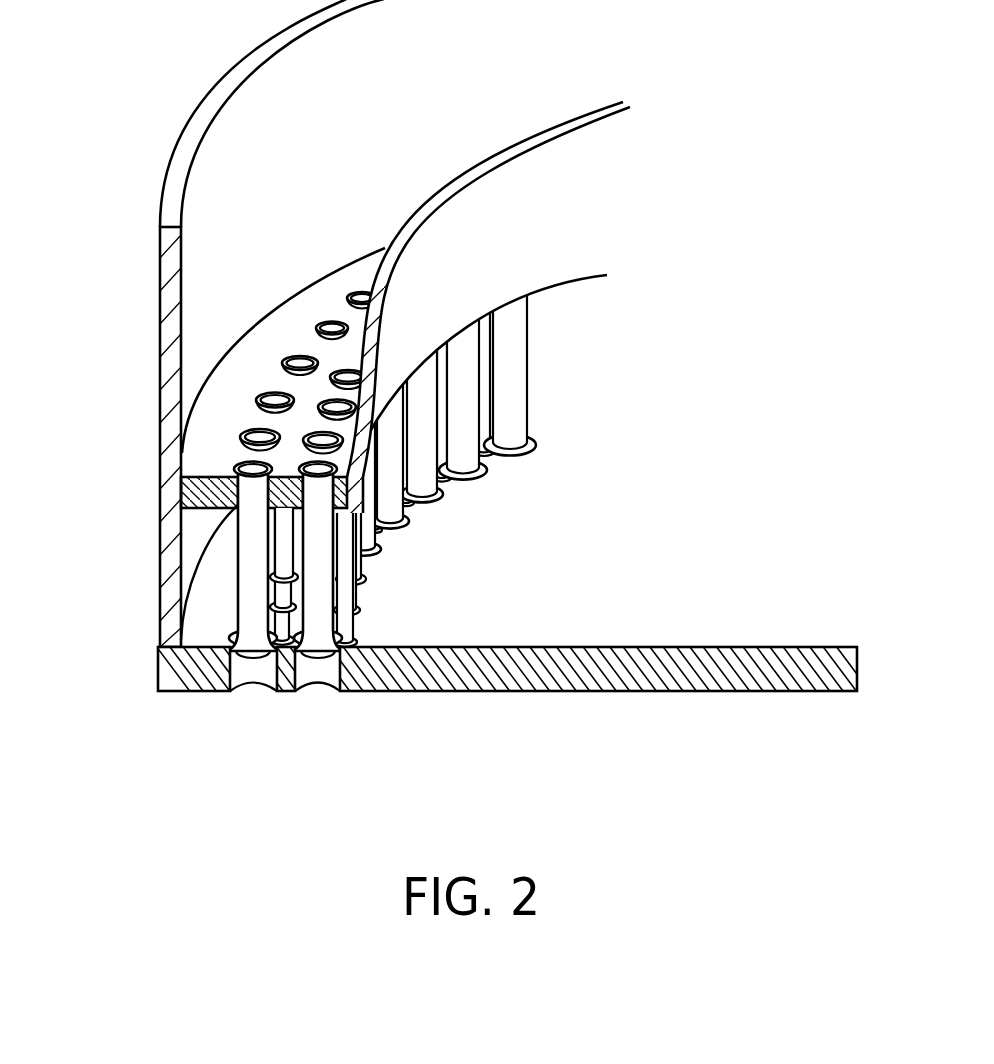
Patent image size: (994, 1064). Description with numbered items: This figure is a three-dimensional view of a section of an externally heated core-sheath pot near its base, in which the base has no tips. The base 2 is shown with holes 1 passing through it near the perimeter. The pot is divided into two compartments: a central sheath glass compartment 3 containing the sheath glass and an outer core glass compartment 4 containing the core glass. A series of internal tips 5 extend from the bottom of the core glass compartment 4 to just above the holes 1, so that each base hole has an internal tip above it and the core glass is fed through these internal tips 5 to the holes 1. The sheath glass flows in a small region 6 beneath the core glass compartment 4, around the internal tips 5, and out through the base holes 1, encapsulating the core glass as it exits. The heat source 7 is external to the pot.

The holes 1 is at (317, 682).
The base 2 is at (532, 677).
The sheath glass compartment 3 is at (555, 458).
The core glass compartment 4 is at (283, 289).
The internal tips 5 is at (252, 557).
The region 6 is at (212, 618).
The heat source 7 is at (209, 323).